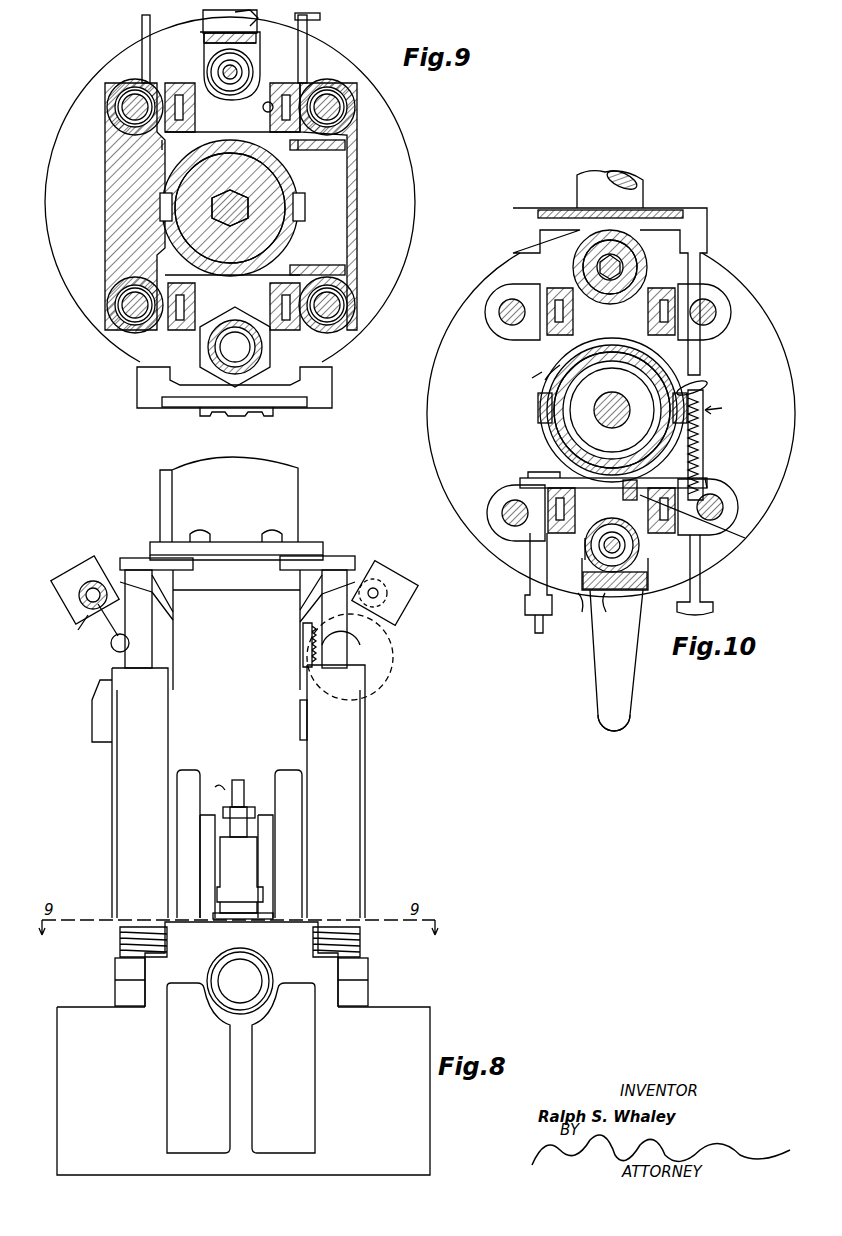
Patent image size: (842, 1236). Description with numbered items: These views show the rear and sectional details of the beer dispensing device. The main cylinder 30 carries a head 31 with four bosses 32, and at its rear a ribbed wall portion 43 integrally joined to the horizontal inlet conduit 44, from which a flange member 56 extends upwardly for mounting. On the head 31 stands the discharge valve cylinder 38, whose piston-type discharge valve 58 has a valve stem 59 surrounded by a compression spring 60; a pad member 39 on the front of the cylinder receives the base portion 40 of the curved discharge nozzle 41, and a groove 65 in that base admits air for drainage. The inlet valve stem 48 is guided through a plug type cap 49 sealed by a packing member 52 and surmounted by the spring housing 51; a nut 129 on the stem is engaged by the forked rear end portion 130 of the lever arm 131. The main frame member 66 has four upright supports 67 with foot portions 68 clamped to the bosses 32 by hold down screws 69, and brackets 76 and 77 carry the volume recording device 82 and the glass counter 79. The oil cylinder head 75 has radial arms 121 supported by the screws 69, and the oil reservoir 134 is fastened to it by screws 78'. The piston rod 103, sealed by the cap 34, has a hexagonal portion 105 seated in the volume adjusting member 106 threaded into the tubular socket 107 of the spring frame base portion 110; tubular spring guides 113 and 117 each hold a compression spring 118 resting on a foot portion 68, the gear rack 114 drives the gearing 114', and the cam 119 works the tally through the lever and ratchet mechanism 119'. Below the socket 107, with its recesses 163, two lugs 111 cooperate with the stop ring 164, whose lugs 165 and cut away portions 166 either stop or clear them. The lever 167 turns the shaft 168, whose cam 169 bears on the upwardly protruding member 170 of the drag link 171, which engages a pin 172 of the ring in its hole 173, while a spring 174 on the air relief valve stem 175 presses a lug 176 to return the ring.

In FIG. 8, the main cylinder 30 is at (425, 1016).
In FIG. 9, the head 31 is at (398, 158).
In FIG. 10, the head 31 is at (725, 262).
In FIG. 8, the head 31 is at (415, 1007).
In FIG. 8, the bosses 32 is at (118, 992).
In FIG. 10, the cap 34 is at (650, 365).
In FIG. 10, the discharge valve cylinder 38 is at (567, 548).
In FIG. 9, the pad member 39 is at (215, 50).
In FIG. 10, the pad member 39 is at (640, 570).
In FIG. 9, the base portion of nozzle 40 is at (204, 35).
In FIG. 10, the base portion of nozzle 40 is at (616, 660).
In FIG. 10, the discharge nozzle 41 is at (603, 695).
In FIG. 9, the ribbed wall portion 43 is at (140, 397).
In FIG. 10, the ribbed wall portion 43 is at (698, 212).
In FIG. 9, the inlet conduit 44 is at (286, 418).
In FIG. 10, the inlet conduit 44 is at (620, 172).
In FIG. 8, the inlet conduit 44 is at (258, 1005).
In FIG. 10, the valve stem 48 is at (600, 270).
In FIG. 8, the valve stem 48 is at (242, 825).
In FIG. 9, the plug type cap 49 is at (208, 356).
In FIG. 10, the plug type cap 49 is at (640, 256).
In FIG. 9, the spring housing 51 is at (250, 346).
In FIG. 8, the spring housing 51 is at (250, 852).
In FIG. 10, the packing member 52 is at (622, 267).
In FIG. 9, the flange member 56 is at (288, 403).
In FIG. 10, the flange member 56 is at (652, 210).
In FIG. 8, the flange member 56 is at (300, 918).
In FIG. 9, the discharge valve 58 is at (252, 62).
In FIG. 10, the discharge valve 58 is at (640, 545).
In FIG. 9, the valve stem 59 is at (222, 72).
In FIG. 10, the valve stem 59 is at (605, 552).
In FIG. 10, the compression spring 60 is at (572, 604).
In FIG. 9, the groove 65 is at (247, 22).
In FIG. 10, the groove 65 is at (616, 603).
In FIG. 8, the main frame member 66 is at (288, 718).
In FIG. 9, the upright supports 67 is at (262, 118).
In FIG. 10, the upright supports 67 is at (648, 320).
In FIG. 8, the upright supports 67 is at (180, 800).
In FIG. 9, the foot portion 68 is at (310, 80).
In FIG. 10, the foot portion 68 is at (722, 325).
In FIG. 8, the foot portion 68 is at (118, 968).
In FIG. 9, the hold down screws 69 is at (115, 122).
In FIG. 10, the hold down screws 69 is at (512, 300).
In FIG. 8, the hold down screws 69 is at (135, 578).
In FIG. 8, the oil cylinder head 75 is at (260, 580).
In FIG. 8, the bracket 76 is at (168, 625).
In FIG. 8, the bracket 77 is at (305, 618).
In FIG. 8, the screws 78' is at (236, 542).
In FIG. 8, the glass counter or tally device 79 is at (78, 568).
In FIG. 8, the recording device 82 is at (378, 572).
In FIG. 10, the piston rod 103 is at (610, 425).
In FIG. 9, the hexagonal portion 105 is at (240, 200).
In FIG. 9, the volume adjusting member 106 is at (272, 233).
In FIG. 9, the tubular socket 107 is at (290, 252).
In FIG. 10, the tubular socket 107 is at (690, 372).
In FIG. 9, the base portion 110 is at (344, 211).
In FIG. 10, the lugs 111 is at (708, 437).
In FIG. 8, the tubular spring guides 113 is at (355, 743).
In FIG. 8, the gear rack 114 is at (285, 645).
In FIG. 8, the gearing 114' is at (372, 657).
In FIG. 8, the tubular spring guides 117 is at (118, 803).
In FIG. 9, the compression spring 118 is at (340, 90).
In FIG. 8, the compression spring 118 is at (122, 940).
In FIG. 8, the cam 119 is at (83, 711).
In FIG. 8, the lever and ratchet mechanism 119' is at (71, 632).
In FIG. 8, the radial arms 121 is at (122, 565).
In FIG. 8, the nut 129 is at (220, 786).
In FIG. 8, the forked rear end portion 130 is at (218, 815).
In FIG. 8, the lever arm 131 is at (246, 782).
In FIG. 8, the oil reservoir 134 is at (287, 502).
In FIG. 9, the recesses 163 is at (300, 190).
In FIG. 10, the recesses 163 is at (590, 400).
In FIG. 10, the stop ring 164 is at (565, 440).
In FIG. 9, the lugs 165 is at (305, 200).
In FIG. 10, the lugs 165 is at (538, 410).
In FIG. 10, the cut away portions 166 is at (522, 380).
In FIG. 10, the lever 167 is at (535, 625).
In FIG. 10, the shaft 168 is at (530, 585).
In FIG. 10, the cam 169 is at (518, 460).
In FIG. 10, the upwardly protruding member 170 is at (518, 482).
In FIG. 10, the drag link 171 is at (708, 480).
In FIG. 10, the pin 172 is at (720, 530).
In FIG. 10, the hole 173 is at (640, 480).
In FIG. 10, the spring 174 is at (702, 593).
In FIG. 10, the air relief valve stem 175 is at (728, 402).
In FIG. 10, the lug 176 is at (708, 384).